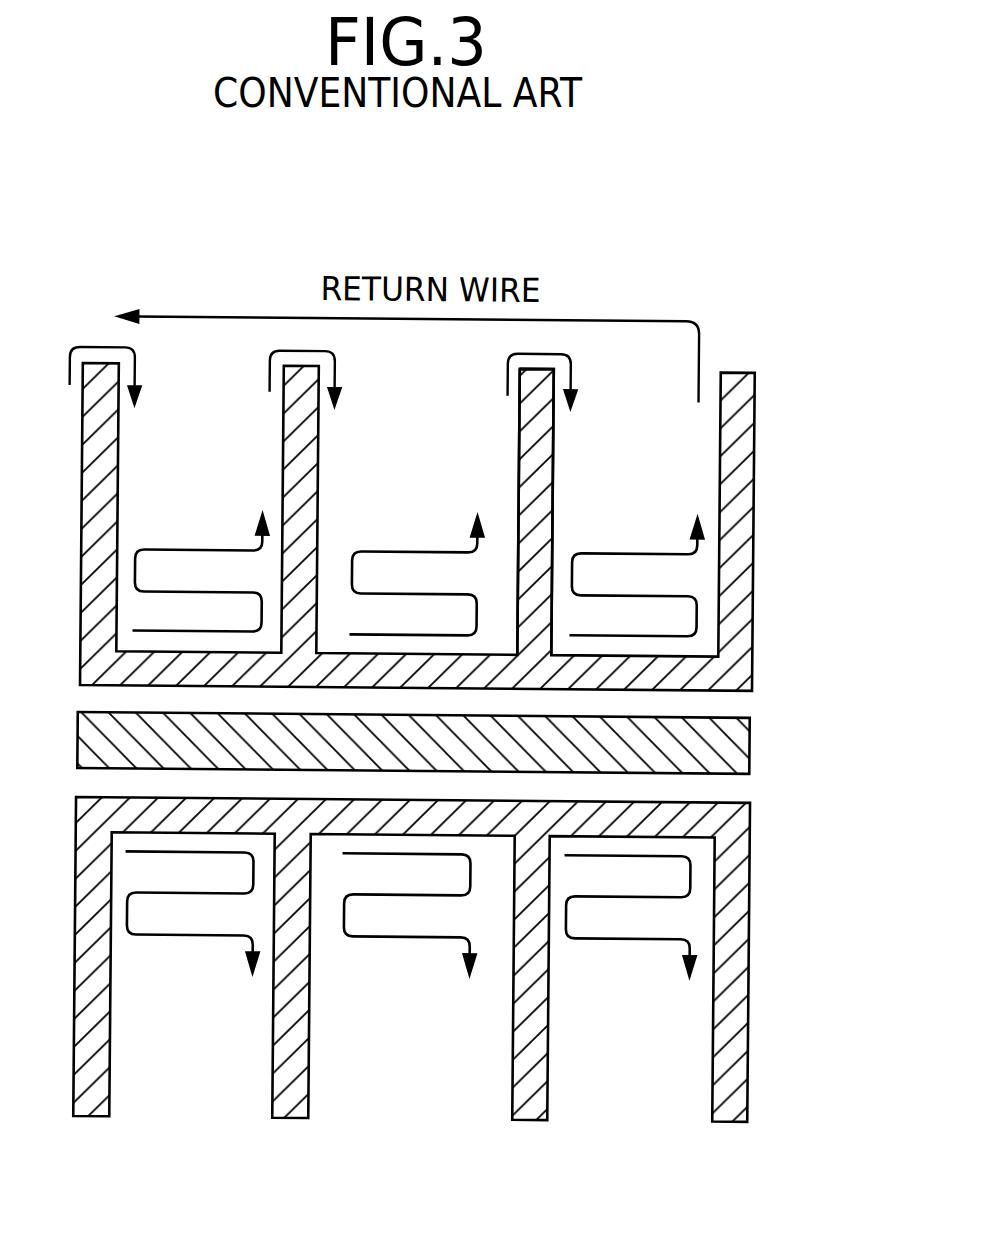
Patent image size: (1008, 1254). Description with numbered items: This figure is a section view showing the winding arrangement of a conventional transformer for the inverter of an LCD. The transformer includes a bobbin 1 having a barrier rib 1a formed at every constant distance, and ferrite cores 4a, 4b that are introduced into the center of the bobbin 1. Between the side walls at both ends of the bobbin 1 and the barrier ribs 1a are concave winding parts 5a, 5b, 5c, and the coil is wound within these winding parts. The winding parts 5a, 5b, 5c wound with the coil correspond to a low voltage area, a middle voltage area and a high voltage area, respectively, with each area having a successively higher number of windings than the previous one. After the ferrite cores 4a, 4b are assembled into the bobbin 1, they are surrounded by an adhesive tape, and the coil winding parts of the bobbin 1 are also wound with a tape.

The bobbin 1 is at (455, 483).
The barrier rib 1a is at (552, 488).
The ferrite core 4a is at (483, 743).
The ferrite core 4b is at (739, 735).
The winding part 5a is at (205, 402).
The winding part 5b is at (428, 405).
The winding part 5c is at (630, 403).